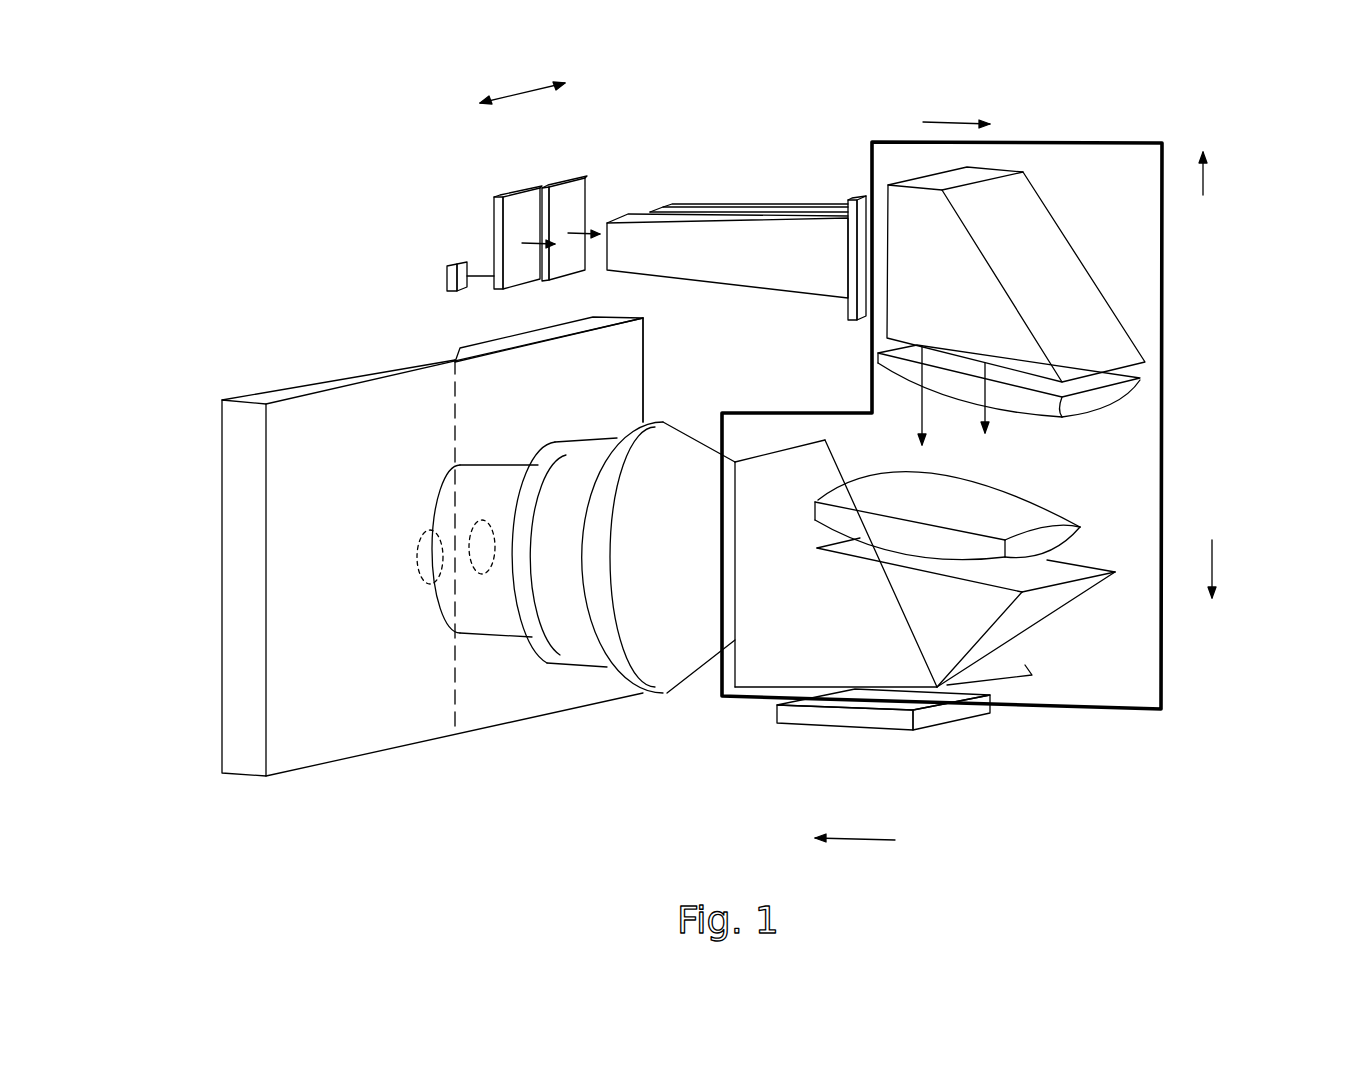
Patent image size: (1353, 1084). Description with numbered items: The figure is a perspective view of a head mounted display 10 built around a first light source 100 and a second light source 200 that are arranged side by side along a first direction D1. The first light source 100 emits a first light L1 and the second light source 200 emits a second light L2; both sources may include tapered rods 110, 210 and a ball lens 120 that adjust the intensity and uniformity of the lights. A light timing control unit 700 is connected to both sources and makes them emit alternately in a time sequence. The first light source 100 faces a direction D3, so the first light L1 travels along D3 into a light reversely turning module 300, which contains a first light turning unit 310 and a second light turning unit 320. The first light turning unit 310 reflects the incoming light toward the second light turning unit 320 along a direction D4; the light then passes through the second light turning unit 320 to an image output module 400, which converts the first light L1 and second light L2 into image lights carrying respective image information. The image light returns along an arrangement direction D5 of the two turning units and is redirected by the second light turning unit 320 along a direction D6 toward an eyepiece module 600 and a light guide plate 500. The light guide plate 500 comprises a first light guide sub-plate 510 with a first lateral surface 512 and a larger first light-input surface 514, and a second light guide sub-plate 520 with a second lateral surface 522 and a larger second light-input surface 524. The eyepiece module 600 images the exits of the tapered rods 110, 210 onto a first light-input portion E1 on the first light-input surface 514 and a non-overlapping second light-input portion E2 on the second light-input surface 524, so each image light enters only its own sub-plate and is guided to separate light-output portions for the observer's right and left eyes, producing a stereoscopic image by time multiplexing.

The head mounted display 10 is at (141, 158).
The first light source 100 is at (512, 193).
The second light source 200 is at (558, 185).
The tapered rod 110 is at (713, 264).
The tapered rod 210 is at (712, 208).
The ball lens 120 is at (850, 240).
The light reversely turning module 300 is at (800, 425).
The first light turning unit 310 is at (1035, 240).
The second light turning unit 320 is at (1028, 625).
The image output module 400 is at (945, 715).
The light guide plate 500 is at (439, 558).
The first light guide sub-plate 510 is at (578, 325).
The first lateral surface 512 is at (243, 428).
The first light-input surface 514 is at (505, 360).
The second light guide sub-plate 520 is at (263, 385).
The second lateral surface 522 is at (643, 370).
The second light-input surface 524 is at (315, 390).
The eyepiece module 600 is at (580, 457).
The light timing control unit 700 is at (445, 273).
The first light L1 is at (517, 240).
The second light L2 is at (578, 232).
The first light-input portion E1 is at (495, 548).
The second light-input portion E2 is at (417, 554).
The first direction D1 is at (530, 90).
The direction D3 is at (958, 118).
The direction D4 is at (1220, 558).
The arrangement direction D5 is at (1212, 183).
The direction D6 is at (876, 838).